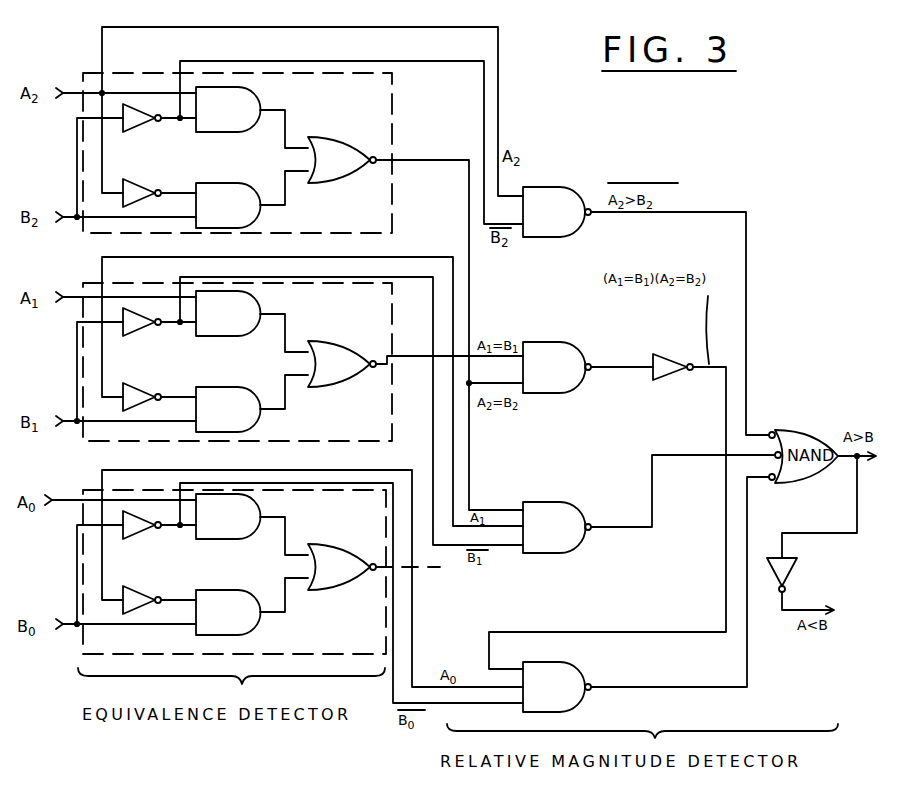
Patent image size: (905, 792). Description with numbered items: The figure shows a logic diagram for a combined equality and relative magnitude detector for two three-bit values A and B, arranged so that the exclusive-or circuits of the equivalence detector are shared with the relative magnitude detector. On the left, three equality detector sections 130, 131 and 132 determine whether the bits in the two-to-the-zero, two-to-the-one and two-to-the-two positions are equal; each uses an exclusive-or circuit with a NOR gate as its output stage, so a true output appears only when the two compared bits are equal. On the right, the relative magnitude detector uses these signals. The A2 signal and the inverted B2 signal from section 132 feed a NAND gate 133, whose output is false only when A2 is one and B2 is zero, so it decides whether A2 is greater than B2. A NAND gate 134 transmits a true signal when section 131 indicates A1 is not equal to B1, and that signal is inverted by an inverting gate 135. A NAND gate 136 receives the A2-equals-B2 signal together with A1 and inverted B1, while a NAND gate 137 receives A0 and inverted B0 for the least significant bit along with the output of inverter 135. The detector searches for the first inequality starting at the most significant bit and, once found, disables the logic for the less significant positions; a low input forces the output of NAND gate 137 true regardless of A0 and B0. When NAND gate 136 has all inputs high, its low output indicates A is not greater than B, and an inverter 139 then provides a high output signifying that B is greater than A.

The equality detector section 130 is at (350, 520).
The equality detector section 131 is at (348, 313).
The equality detector section 132 is at (348, 105).
The NAND gate 133 is at (558, 187).
The NAND gate 134 is at (577, 350).
The inverting gate 135 is at (662, 352).
The NAND gate 136 is at (565, 508).
The NAND gate 137 is at (579, 673).
The inverter 139 is at (785, 581).